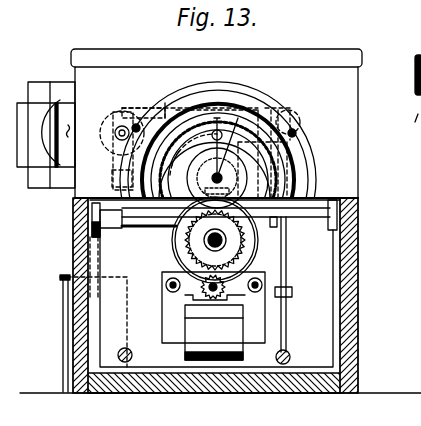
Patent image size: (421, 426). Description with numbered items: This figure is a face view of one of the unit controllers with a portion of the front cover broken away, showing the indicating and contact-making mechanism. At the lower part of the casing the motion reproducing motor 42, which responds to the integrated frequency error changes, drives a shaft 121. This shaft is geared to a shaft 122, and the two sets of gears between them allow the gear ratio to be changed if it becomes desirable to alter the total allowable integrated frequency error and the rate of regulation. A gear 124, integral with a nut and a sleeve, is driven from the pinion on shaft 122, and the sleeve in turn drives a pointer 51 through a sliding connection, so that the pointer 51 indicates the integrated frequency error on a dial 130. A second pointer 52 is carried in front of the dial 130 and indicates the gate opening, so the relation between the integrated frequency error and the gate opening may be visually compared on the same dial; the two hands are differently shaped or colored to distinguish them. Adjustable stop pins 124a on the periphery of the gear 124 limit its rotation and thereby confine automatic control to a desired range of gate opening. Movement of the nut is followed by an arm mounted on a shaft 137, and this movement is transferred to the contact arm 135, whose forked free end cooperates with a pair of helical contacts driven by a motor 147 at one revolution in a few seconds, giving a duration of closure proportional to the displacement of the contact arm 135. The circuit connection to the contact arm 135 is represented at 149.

The motion reproducing motor 42 is at (162, 333).
The pointer 51 is at (212, 146).
The pointer 52 is at (175, 162).
The shaft 121 is at (203, 290).
The shaft 122 is at (207, 246).
The gear 124 is at (250, 240).
The adjustable stop pins 124a is at (196, 236).
The dial 130 is at (180, 160).
The contact arm 135 is at (130, 110).
The shaft 137 is at (289, 316).
The motor 147 is at (53, 188).
The circuit connection 149 is at (118, 140).